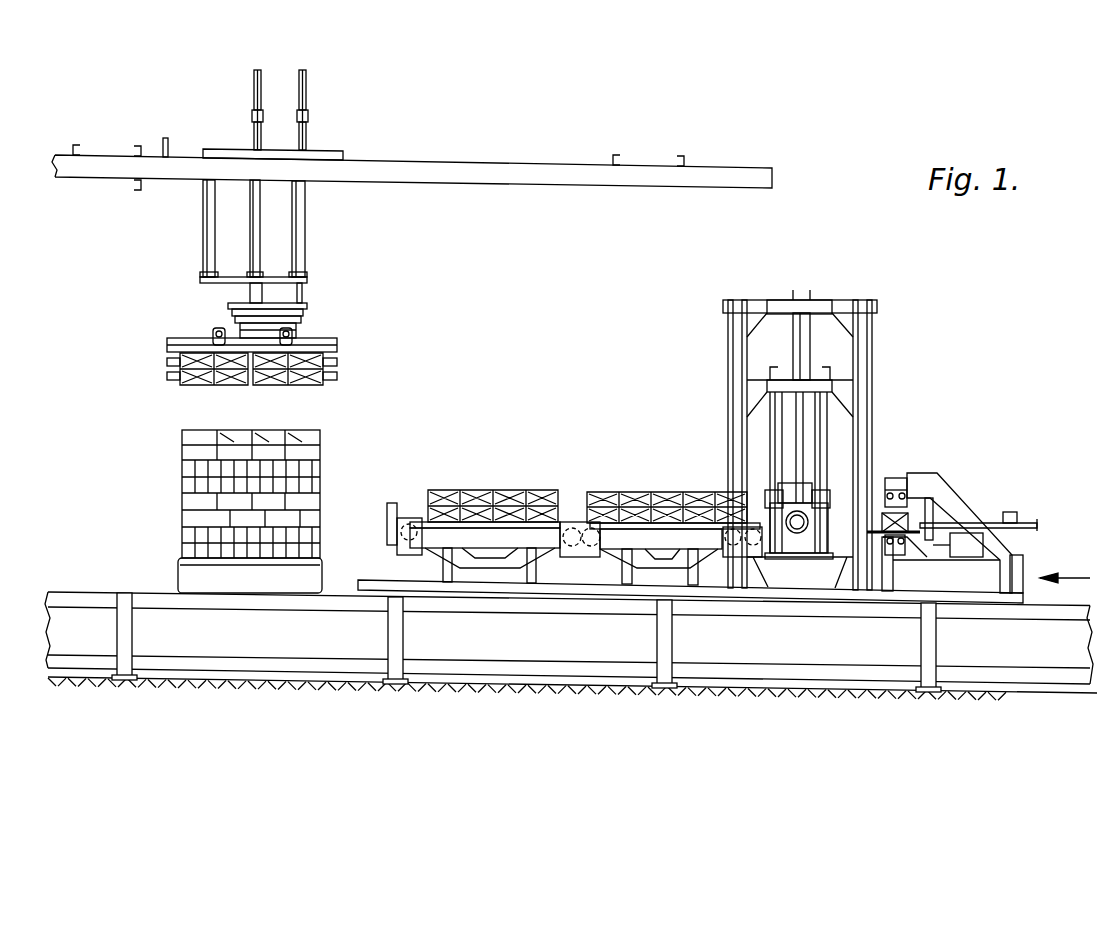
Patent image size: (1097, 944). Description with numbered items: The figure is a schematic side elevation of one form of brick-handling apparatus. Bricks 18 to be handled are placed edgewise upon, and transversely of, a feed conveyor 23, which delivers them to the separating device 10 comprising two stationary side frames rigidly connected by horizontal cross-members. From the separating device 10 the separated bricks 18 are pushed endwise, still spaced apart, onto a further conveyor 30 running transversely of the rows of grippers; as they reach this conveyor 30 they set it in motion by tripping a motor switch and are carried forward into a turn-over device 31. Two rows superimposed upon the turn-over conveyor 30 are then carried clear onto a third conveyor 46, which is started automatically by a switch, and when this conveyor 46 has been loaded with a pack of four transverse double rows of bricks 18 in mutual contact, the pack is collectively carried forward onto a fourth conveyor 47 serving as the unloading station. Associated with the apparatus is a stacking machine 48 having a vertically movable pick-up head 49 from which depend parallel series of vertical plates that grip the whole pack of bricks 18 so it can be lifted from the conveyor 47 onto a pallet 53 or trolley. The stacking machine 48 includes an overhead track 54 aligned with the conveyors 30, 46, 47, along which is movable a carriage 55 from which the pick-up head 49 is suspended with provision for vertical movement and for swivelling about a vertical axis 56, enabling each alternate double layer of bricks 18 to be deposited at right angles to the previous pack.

The separating device 10 is at (958, 465).
The bricks 18 is at (183, 503).
The feed conveyor 23 is at (872, 525).
The further conveyor (turn-over conveyor) 30 is at (838, 532).
The turn-over device 31 is at (782, 288).
The third conveyor 46 is at (668, 525).
The fourth conveyor 47 is at (512, 522).
The stacking machine 48 is at (180, 236).
The pick-up head 49 is at (312, 340).
The pallet 53 is at (289, 583).
The overhead track 54 is at (502, 172).
The carriage 55 is at (333, 153).
The vertical axis 56 is at (252, 292).